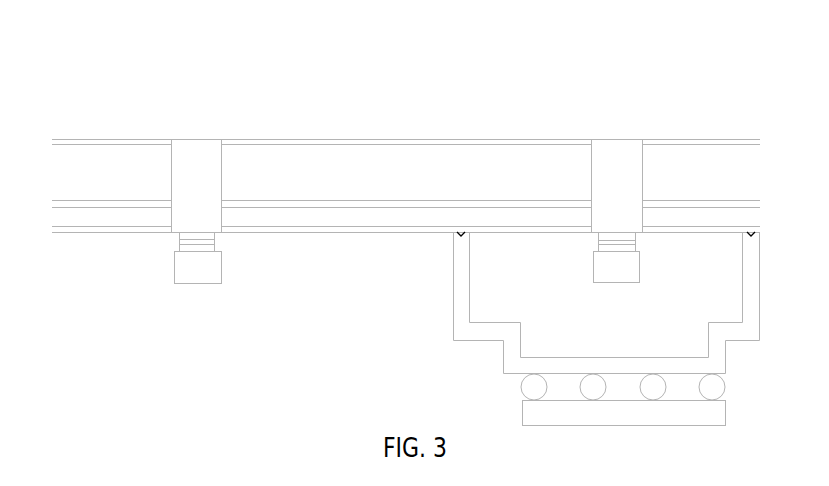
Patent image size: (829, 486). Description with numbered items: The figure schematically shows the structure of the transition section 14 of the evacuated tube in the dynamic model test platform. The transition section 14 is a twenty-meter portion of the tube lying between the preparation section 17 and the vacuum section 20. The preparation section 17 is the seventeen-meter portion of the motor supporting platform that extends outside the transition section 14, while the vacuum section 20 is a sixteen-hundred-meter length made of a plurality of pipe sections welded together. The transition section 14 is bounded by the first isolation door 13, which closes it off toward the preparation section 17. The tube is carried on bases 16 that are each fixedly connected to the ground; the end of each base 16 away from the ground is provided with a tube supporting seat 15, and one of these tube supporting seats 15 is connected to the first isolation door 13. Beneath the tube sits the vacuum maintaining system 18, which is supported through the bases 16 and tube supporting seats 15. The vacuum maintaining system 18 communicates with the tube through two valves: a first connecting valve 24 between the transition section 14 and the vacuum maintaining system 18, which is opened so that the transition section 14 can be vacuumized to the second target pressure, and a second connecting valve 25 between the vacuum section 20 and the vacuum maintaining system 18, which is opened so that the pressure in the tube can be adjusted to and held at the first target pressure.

The first isolation door 13 is at (191, 156).
The transition section 14 is at (380, 163).
The tube supporting seat 15 is at (213, 238).
The base 16 is at (179, 248).
The preparation section 17 is at (96, 175).
The vacuum maintaining system 18 is at (480, 356).
The vacuum section 20 is at (676, 155).
The first connecting valve 24 is at (457, 237).
The second connecting valve 25 is at (750, 235).